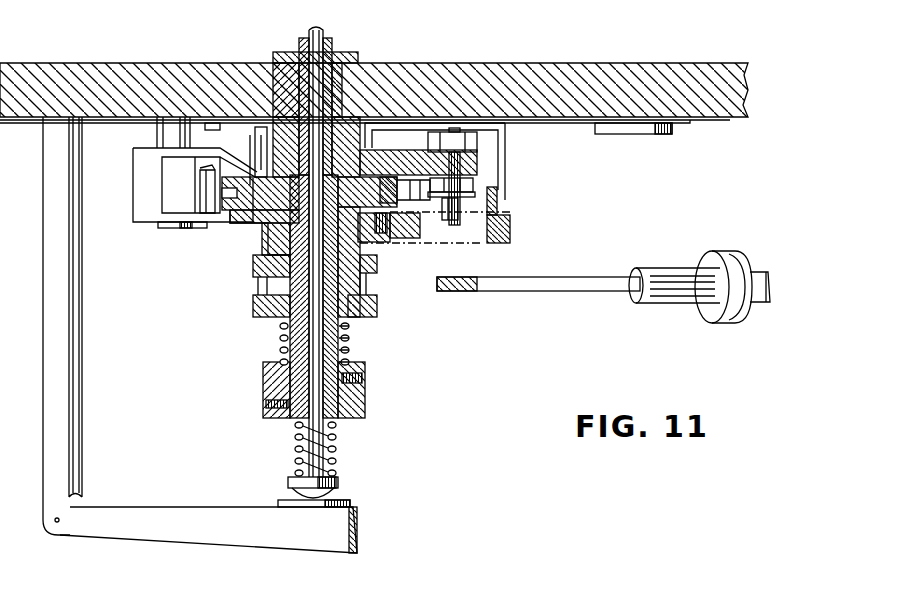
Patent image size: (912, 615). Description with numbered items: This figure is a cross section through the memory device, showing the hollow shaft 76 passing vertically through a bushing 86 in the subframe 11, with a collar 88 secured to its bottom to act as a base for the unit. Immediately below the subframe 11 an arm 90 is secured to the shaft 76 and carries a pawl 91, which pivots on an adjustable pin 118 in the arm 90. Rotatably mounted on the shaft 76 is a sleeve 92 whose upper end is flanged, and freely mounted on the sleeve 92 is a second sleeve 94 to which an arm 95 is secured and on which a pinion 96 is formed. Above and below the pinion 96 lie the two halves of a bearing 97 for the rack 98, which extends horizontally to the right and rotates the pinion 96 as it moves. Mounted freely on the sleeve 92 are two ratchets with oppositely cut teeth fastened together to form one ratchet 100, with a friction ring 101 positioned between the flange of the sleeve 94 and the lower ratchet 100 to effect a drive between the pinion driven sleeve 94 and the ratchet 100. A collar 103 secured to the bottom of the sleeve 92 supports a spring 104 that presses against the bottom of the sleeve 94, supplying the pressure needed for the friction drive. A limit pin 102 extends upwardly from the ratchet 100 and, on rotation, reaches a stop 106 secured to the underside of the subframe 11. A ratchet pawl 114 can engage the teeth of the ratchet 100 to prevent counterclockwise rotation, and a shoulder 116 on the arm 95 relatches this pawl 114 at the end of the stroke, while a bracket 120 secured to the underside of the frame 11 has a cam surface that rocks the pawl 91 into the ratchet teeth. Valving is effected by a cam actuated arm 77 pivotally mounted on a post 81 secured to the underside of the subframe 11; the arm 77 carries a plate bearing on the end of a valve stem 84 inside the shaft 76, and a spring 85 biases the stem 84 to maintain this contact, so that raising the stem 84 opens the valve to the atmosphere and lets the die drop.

The subframe 11 is at (517, 90).
The hollow shaft 76 is at (333, 47).
The cam actuated arm 77 is at (183, 518).
The post 81 is at (62, 366).
The valve stem 84 is at (311, 30).
The spring 85 is at (334, 465).
The bushing 86 is at (360, 58).
The collar 88 is at (360, 406).
The arm 90 is at (478, 161).
The pawl 91 is at (476, 188).
The sleeve 92 is at (338, 244).
The second sleeve 94 is at (258, 287).
The arm 95 is at (488, 238).
The pinion 96 is at (255, 300).
The bearing 97 is at (377, 306).
The rack 98 is at (538, 291).
The ratchet 100 is at (214, 214).
The friction ring 101 is at (229, 212).
The limit pin 102 is at (258, 128).
The collar 103 is at (360, 373).
The spring 104 is at (350, 343).
The stop 106 is at (420, 127).
The ratchet pawl 114 is at (150, 205).
The shoulder 116 is at (511, 222).
The adjustable pin 118 is at (457, 218).
The bracket 120 is at (507, 152).